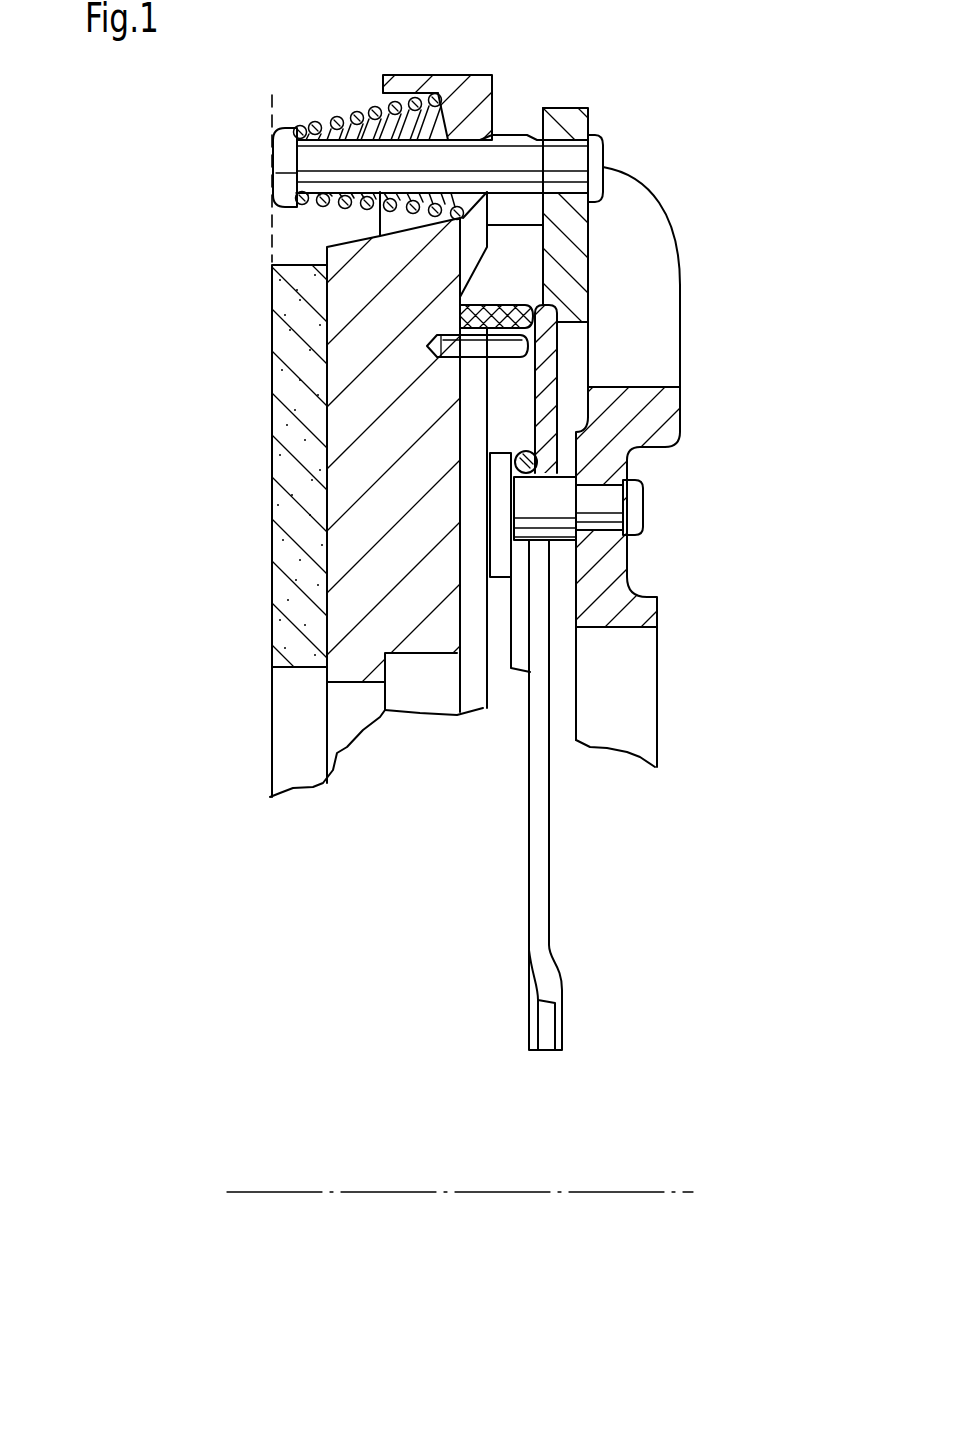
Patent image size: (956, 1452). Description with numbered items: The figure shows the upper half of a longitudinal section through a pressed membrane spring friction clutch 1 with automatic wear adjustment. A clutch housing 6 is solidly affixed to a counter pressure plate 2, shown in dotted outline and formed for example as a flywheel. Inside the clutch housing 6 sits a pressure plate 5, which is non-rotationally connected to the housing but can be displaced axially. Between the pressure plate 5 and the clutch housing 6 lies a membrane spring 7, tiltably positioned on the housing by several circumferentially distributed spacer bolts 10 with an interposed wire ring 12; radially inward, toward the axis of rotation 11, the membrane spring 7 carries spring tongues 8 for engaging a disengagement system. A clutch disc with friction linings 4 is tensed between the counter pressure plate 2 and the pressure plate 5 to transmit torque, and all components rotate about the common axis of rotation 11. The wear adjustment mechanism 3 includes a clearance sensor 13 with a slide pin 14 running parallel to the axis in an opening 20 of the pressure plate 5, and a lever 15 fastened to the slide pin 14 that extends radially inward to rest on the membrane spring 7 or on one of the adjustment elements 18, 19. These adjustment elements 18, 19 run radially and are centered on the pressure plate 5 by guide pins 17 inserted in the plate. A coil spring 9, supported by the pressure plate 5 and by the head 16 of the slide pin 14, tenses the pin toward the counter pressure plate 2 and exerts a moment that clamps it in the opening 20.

The friction clutch 1 is at (739, 204).
The counter pressure plate 2 is at (237, 158).
The mechanism for automatic wear adjustment 3 is at (642, 219).
The friction linings 4 is at (295, 511).
The pressure plate 5 is at (405, 433).
The clutch housing 6 is at (651, 533).
The membrane spring 7 is at (639, 388).
The spring tongues 8 is at (510, 751).
The coil spring 9 is at (379, 128).
The spacer bolts 10 is at (621, 508).
The axis of rotation 11 is at (460, 1233).
The wire ring 12 is at (627, 459).
The clearance sensor 13 is at (570, 101).
The slide pin 14 is at (442, 105).
The lever 15 is at (580, 190).
The head 16 is at (250, 162).
The guide pins 17 is at (643, 315).
The adjustment element 18 is at (605, 284).
The adjustment element 19 is at (366, 331).
The opening 20 is at (463, 356).